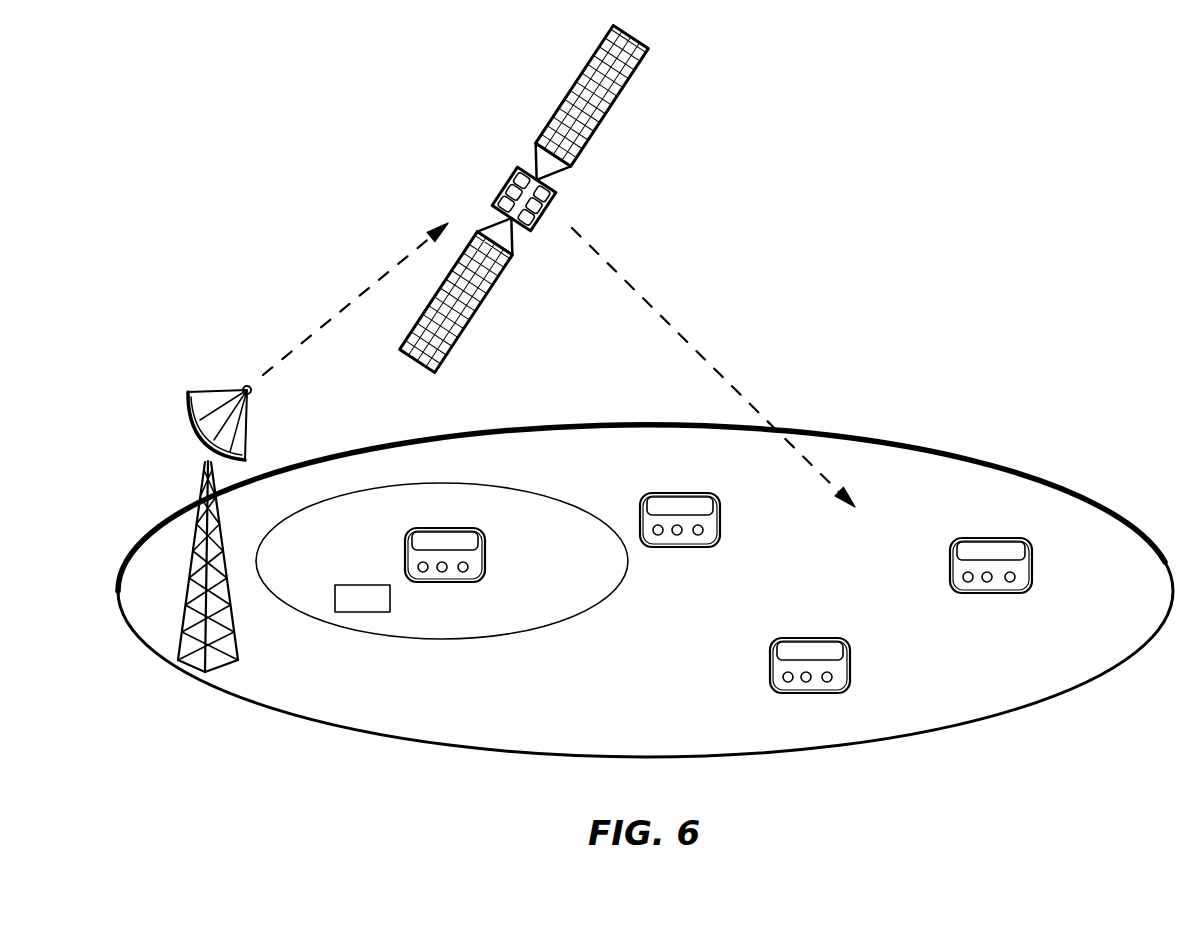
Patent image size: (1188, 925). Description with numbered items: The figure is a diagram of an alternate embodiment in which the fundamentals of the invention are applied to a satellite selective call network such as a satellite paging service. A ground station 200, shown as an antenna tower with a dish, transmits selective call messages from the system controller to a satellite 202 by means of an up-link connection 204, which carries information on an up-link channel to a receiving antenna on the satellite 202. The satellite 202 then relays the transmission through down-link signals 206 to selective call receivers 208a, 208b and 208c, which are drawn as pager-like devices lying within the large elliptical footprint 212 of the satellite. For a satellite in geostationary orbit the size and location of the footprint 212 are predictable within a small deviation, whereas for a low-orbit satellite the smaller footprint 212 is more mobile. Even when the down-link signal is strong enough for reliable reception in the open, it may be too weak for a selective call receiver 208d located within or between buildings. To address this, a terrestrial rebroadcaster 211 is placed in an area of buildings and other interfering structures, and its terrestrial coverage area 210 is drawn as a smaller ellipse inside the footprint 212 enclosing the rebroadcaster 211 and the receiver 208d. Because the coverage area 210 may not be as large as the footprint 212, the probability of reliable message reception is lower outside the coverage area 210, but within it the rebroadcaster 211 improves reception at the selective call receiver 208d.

The ground station 200 is at (192, 472).
The satellite 202 is at (608, 110).
The up-link connection 204 is at (375, 288).
The down-link signals 206 is at (670, 322).
The selective call receiver 208a is at (1003, 538).
The selective call receiver 208b is at (720, 530).
The selective call receiver 208c is at (817, 638).
The selective call receiver 208d is at (430, 582).
The coverage area 210 is at (440, 640).
The terrestrial rebroadcaster 211 is at (370, 585).
The footprint 212 is at (302, 722).